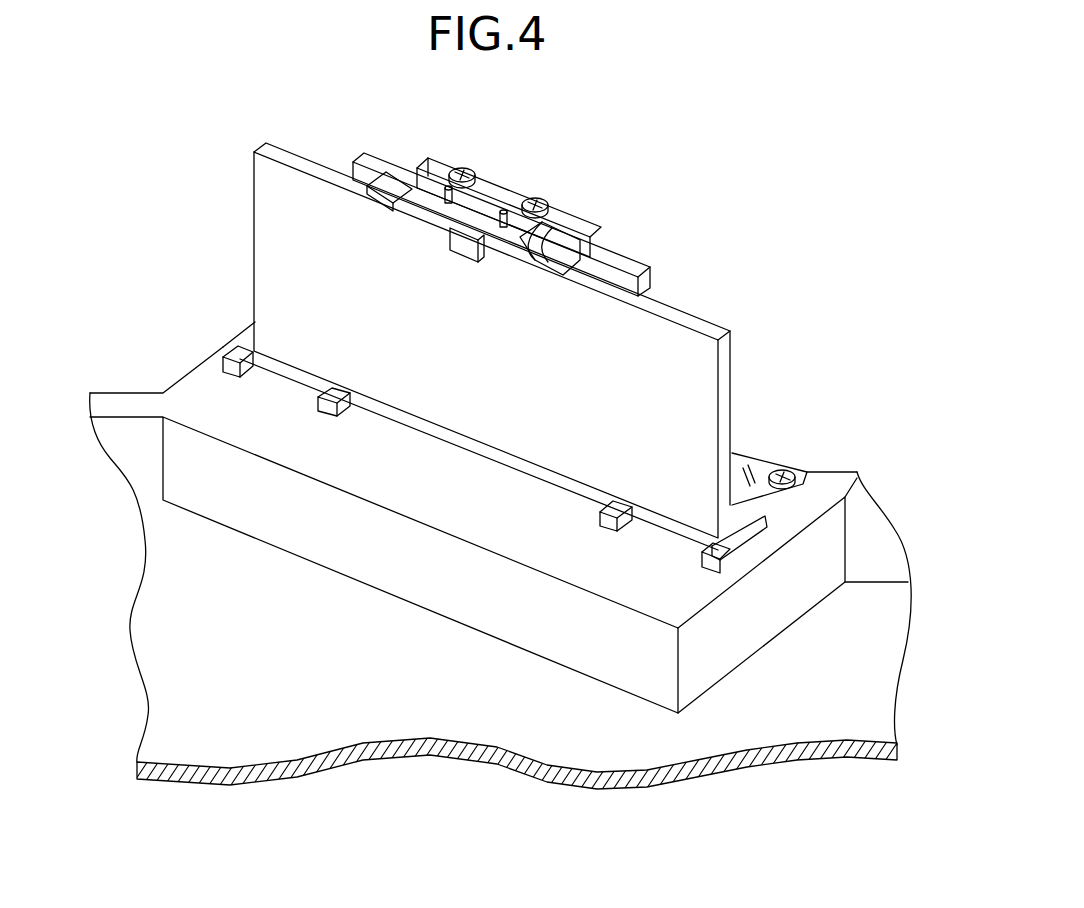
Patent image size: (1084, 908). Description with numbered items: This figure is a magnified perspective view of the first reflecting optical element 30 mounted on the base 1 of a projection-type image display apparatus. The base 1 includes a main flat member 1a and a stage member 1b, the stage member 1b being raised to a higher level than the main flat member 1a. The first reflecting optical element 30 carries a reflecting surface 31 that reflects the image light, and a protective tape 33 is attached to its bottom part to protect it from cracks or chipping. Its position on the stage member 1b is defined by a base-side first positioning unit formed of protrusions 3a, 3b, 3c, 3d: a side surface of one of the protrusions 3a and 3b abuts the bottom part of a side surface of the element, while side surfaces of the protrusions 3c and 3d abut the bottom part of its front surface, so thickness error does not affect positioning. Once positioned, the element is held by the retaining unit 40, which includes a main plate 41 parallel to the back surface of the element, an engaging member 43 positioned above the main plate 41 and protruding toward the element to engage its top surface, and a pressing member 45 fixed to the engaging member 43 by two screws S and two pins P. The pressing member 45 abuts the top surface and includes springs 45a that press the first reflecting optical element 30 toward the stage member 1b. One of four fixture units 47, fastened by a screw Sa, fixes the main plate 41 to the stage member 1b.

The base 1 is at (163, 617).
The main flat member 1a is at (160, 712).
The stage member 1b is at (478, 512).
The protrusion 3a is at (708, 566).
The protrusion 3b is at (238, 355).
The protrusion 3c is at (613, 528).
The protrusion 3d is at (334, 409).
The first reflecting optical element 30 is at (515, 340).
The reflecting surface 31 is at (616, 355).
The protective tape 33 is at (456, 437).
The retaining unit 40 is at (507, 210).
The main plate 41 is at (622, 266).
The engaging member 43 is at (462, 244).
The pressing member 45 is at (473, 210).
The spring 45a is at (401, 203).
The fixture unit 47 is at (745, 461).
The pin P is at (447, 192).
The screw S is at (466, 168).
The screw Sa is at (790, 469).